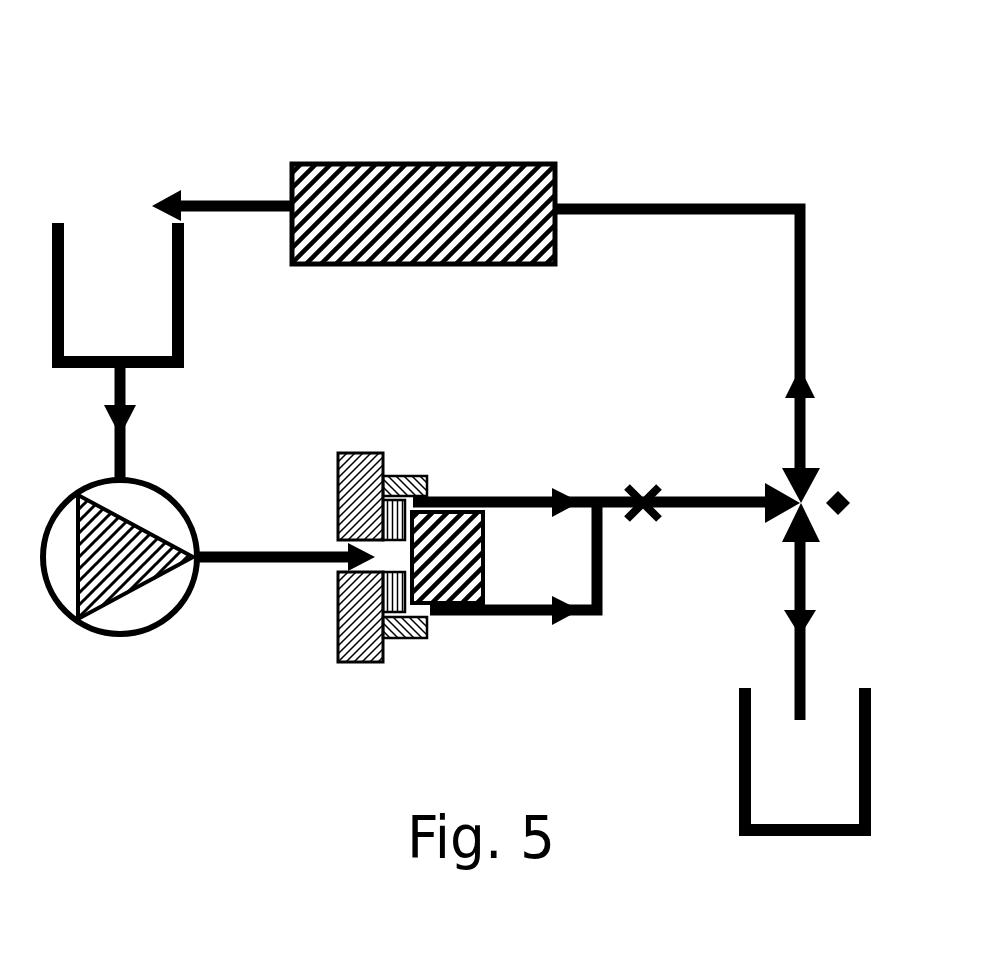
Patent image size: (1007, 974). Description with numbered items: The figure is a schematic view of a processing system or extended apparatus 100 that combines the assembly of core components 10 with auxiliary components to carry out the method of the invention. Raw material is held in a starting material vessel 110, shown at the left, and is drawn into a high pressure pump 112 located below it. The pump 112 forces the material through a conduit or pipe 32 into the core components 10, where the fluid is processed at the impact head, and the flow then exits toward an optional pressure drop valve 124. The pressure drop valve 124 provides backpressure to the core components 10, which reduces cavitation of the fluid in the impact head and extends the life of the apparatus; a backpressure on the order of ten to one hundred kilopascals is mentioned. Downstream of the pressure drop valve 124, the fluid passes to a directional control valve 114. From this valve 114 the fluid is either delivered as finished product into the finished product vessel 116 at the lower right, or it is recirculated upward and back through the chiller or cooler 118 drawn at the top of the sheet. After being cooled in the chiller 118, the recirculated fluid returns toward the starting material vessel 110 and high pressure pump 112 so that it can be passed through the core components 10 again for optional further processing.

The system or extended apparatus 100 is at (803, 73).
The assembly of core components 10 is at (420, 451).
The conduit/pipe 32 is at (360, 505).
The starting material vessel 110 is at (133, 299).
The high pressure pump 112 is at (140, 607).
The valve 114 is at (817, 480).
The finished product vessel 116 is at (805, 685).
The chiller/cooler 118 is at (553, 161).
The pressure drop valve 124 is at (647, 470).